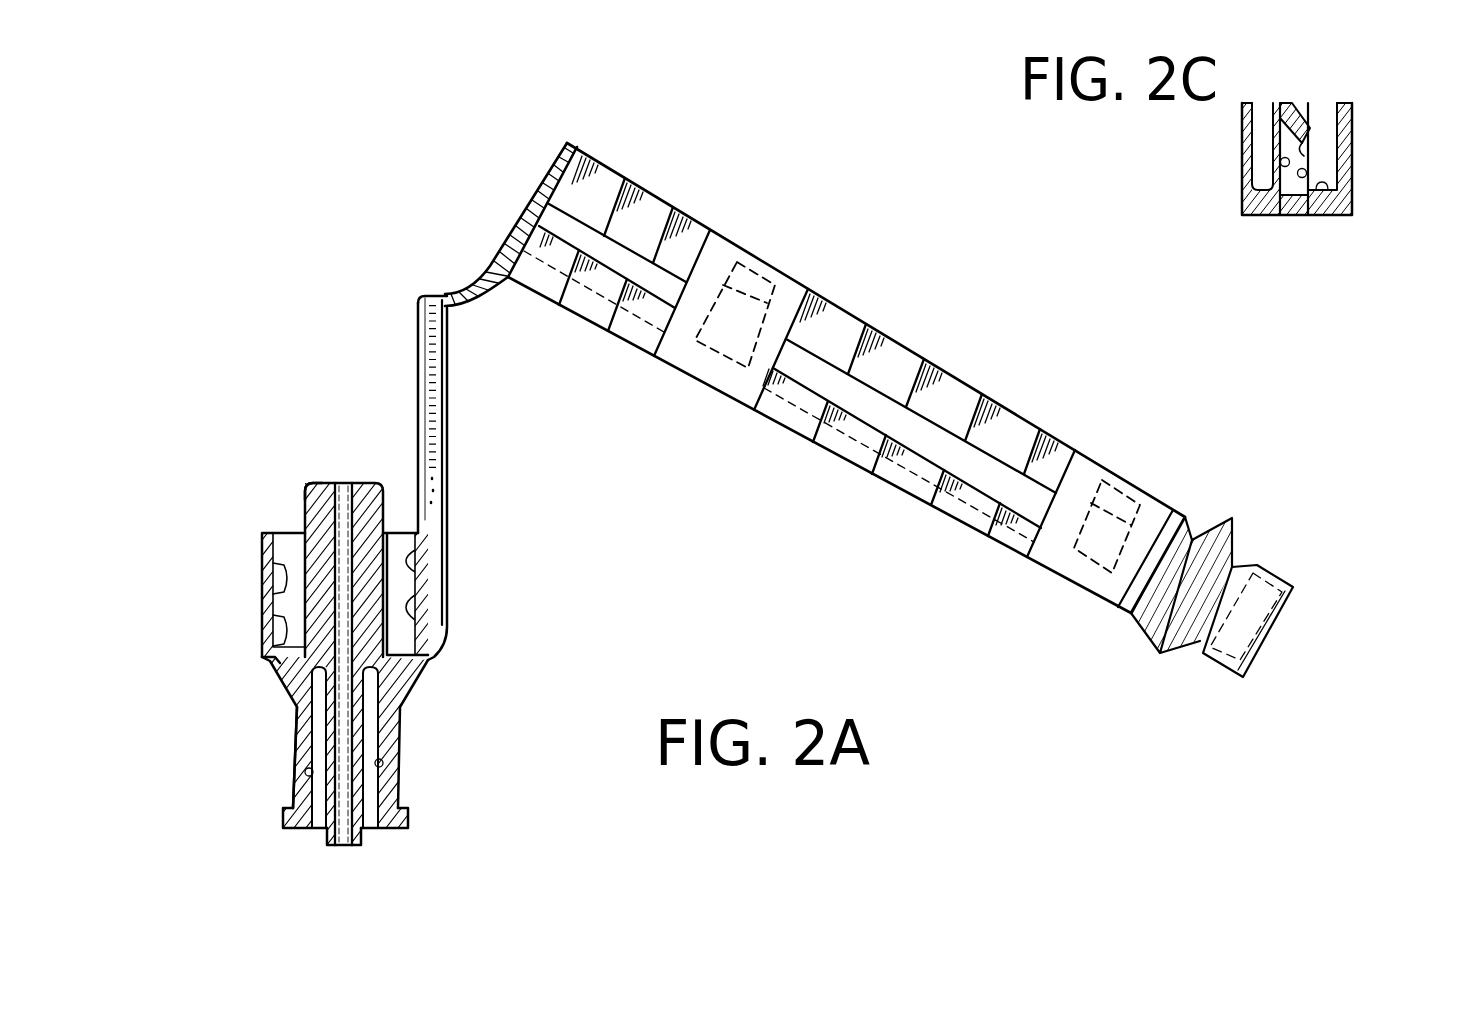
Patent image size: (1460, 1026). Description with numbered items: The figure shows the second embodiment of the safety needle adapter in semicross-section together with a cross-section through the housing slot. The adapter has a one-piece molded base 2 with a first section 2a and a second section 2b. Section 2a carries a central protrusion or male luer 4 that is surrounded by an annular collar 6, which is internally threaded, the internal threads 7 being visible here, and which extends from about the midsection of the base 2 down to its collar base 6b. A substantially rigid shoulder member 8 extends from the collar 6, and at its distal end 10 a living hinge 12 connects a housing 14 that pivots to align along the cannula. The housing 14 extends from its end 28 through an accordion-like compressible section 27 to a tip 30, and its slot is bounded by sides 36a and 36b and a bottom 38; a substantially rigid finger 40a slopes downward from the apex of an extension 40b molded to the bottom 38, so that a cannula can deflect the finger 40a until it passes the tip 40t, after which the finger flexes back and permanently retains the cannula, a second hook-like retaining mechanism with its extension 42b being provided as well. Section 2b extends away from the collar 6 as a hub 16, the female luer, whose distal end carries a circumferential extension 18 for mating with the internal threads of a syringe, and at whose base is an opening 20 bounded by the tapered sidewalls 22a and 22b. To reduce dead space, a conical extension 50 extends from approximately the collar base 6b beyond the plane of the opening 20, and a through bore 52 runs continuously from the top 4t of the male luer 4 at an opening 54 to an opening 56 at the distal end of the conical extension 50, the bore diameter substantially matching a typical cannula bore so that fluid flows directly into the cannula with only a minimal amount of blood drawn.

In FIG. 2A, the base 2 is at (255, 718).
In FIG. 2A, the first section 2a is at (457, 568).
In FIG. 2A, the second section 2b is at (412, 722).
In FIG. 2A, the central protrusion 4 is at (305, 489).
In FIG. 2A, the top of male luer 4t is at (306, 484).
In FIG. 2A, the annular collar 6 is at (262, 541).
In FIG. 2A, the collar base 6b is at (266, 645).
In FIG. 2A, the detent bumps 7 is at (278, 592).
In FIG. 2A, the shoulder member 8 is at (449, 432).
In FIG. 2A, the distal end of shoulder member 10 is at (424, 296).
In FIG. 2A, the living hinge 12 is at (478, 292).
In FIG. 2A, the housing 14 is at (872, 497).
In FIG. 2A, the hub 16 is at (297, 750).
In FIG. 2A, the circumferential extension 18 is at (412, 816).
In FIG. 2A, the opening 20 is at (378, 823).
In FIG. 2A, the sidewall 22a is at (308, 776).
In FIG. 2A, the sidewall 22b is at (383, 764).
In FIG. 2A, the compressible section 27 is at (1181, 646).
In FIG. 2A, the end of housing 28 is at (566, 142).
In FIG. 2A, the tip 30 is at (1274, 634).
In FIG. 2C, the slot side 36a is at (1270, 167).
In FIG. 2C, the slot side 36b is at (1332, 177).
In FIG. 2A, the slot bottom 38 is at (862, 337).
In FIG. 2C, the slot bottom 38 is at (1327, 215).
In FIG. 2A, the finger 40a is at (733, 262).
In FIG. 2C, the finger 40a is at (1309, 164).
In FIG. 2A, the extension 40b is at (1078, 524).
In FIG. 2A, the finger tip 40t is at (1120, 490).
In FIG. 2C, the finger tip 40t is at (1312, 137).
In FIG. 2A, the recess inner edge 42b is at (764, 321).
In FIG. 2A, the conical extension 50 is at (327, 840).
In FIG. 2A, the through bore 52 is at (342, 637).
In FIG. 2A, the opening 54 is at (341, 483).
In FIG. 2A, the opening 56 is at (348, 847).